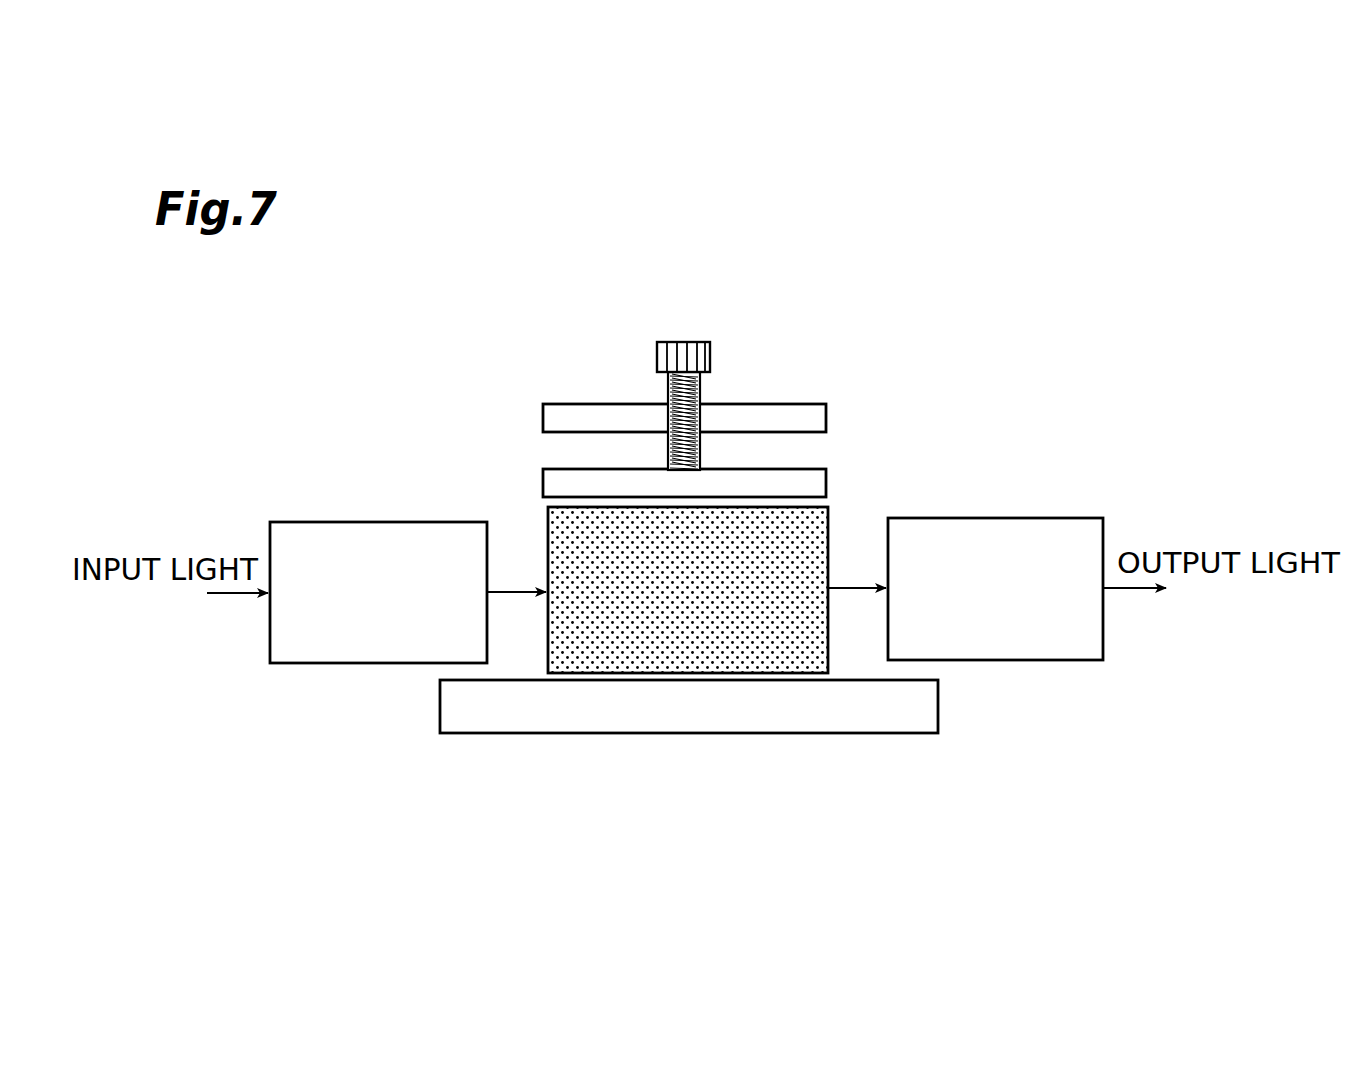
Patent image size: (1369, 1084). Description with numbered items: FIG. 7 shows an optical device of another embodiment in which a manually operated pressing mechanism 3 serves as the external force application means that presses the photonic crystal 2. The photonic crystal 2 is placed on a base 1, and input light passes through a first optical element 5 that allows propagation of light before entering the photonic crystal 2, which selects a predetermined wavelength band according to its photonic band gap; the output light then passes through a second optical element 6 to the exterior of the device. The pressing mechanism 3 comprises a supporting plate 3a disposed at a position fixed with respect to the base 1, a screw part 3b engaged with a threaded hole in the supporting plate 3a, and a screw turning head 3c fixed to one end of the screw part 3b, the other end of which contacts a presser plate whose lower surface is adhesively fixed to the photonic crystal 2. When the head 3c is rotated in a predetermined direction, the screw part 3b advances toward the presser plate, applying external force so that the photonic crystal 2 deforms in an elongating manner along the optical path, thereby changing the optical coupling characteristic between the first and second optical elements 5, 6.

The base 1 is at (805, 733).
The photonic crystal 2 is at (547, 533).
The pressing mechanism 3 is at (723, 366).
The supporting plate 3a is at (827, 415).
The screw part 3b is at (700, 383).
The screw turning head 3c is at (710, 357).
The first optical element 5 is at (345, 663).
The second optical element 6 is at (1053, 660).